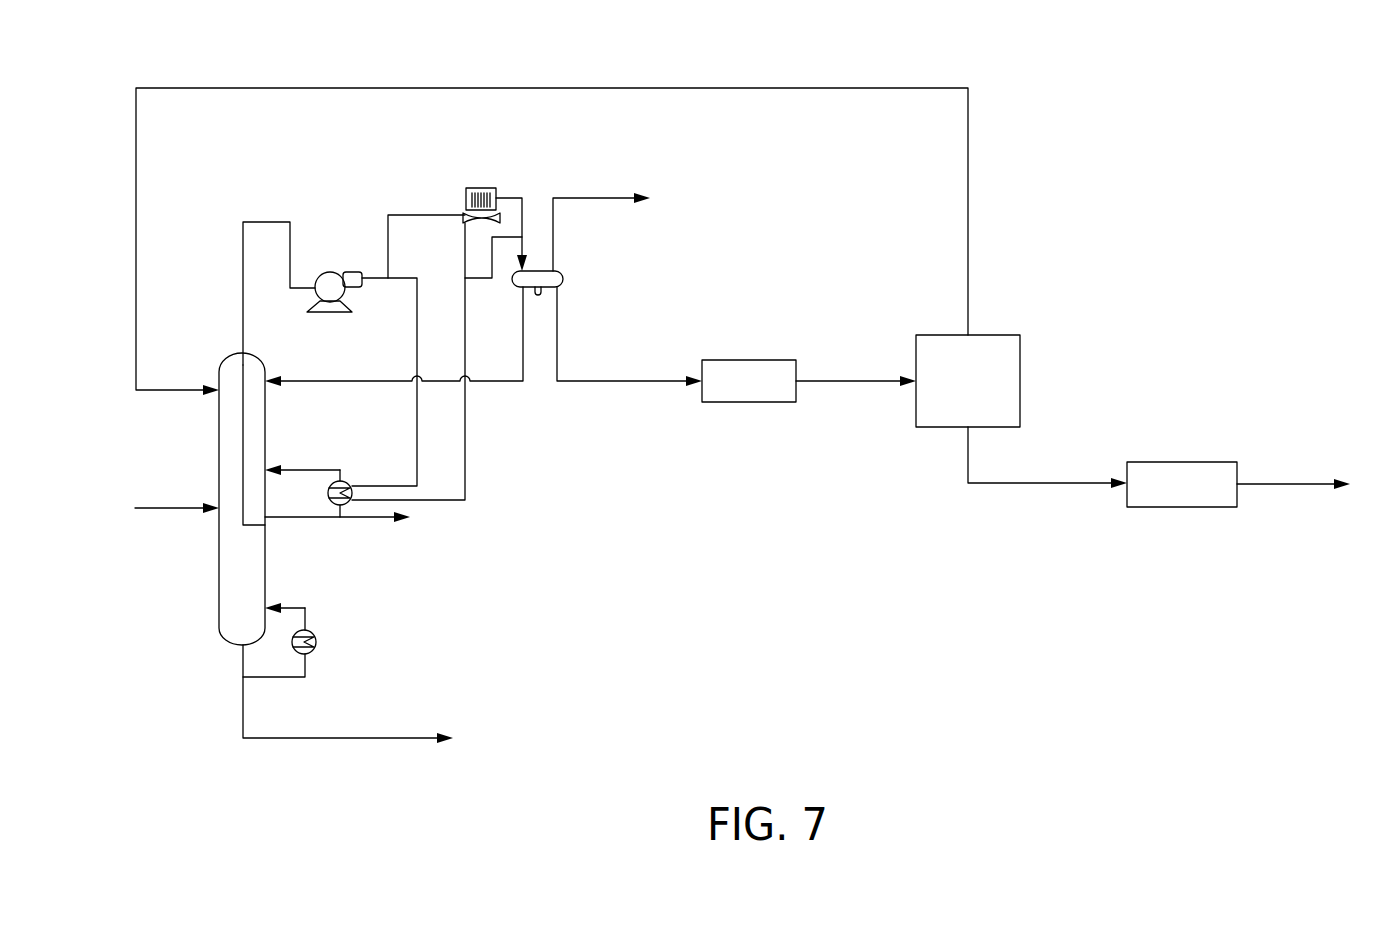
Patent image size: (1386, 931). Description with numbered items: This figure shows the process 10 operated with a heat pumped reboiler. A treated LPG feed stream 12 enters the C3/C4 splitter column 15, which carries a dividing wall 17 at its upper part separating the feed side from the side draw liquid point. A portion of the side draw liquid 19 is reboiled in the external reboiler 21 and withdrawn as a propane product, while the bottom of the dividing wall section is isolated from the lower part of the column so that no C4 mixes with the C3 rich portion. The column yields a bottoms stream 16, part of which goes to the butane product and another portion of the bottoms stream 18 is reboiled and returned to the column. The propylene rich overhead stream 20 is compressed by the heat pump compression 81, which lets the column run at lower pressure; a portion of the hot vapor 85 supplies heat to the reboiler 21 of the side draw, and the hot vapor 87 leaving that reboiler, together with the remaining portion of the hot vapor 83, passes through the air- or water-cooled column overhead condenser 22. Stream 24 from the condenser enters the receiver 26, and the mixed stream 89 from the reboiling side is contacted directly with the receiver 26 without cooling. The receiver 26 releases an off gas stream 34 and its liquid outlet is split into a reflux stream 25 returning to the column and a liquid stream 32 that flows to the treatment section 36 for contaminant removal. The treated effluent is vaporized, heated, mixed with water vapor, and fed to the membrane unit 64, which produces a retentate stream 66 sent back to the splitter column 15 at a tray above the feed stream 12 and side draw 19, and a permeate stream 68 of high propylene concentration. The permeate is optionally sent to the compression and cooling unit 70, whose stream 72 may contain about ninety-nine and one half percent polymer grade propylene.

The process 10 is at (1302, 94).
The LPG feed stream 12 is at (140, 508).
The C3/C4 splitter column 15 is at (267, 560).
The bottoms stream 16 is at (318, 742).
The dividing wall 17 is at (243, 458).
The portion of the bottoms stream 18 is at (308, 663).
The side draw liquid 19 is at (378, 518).
The overhead stream 20 is at (242, 242).
The external reboiler 21 is at (330, 468).
The column overhead condenser 22 is at (482, 187).
The condenser outlet stream 24 is at (522, 198).
The reflux stream 25 is at (498, 383).
The receiver 26 is at (565, 275).
The liquid stream 32 is at (637, 385).
The off gas stream 34 is at (598, 195).
The treatment section 36 is at (751, 358).
The membrane unit 64 is at (1022, 380).
The retentate stream 66 is at (803, 85).
The permeate stream 68 is at (1047, 487).
The compression and cooling unit 70 is at (1181, 460).
The polymer grade propylene stream 72 is at (1280, 486).
The heat pump compression 81 is at (330, 271).
The remaining portion of the hot vapor 83 is at (430, 212).
The portion of the hot vapor 85 is at (383, 280).
The hot vapor after reboiling 87 is at (467, 298).
The mixed stream 89 is at (493, 257).